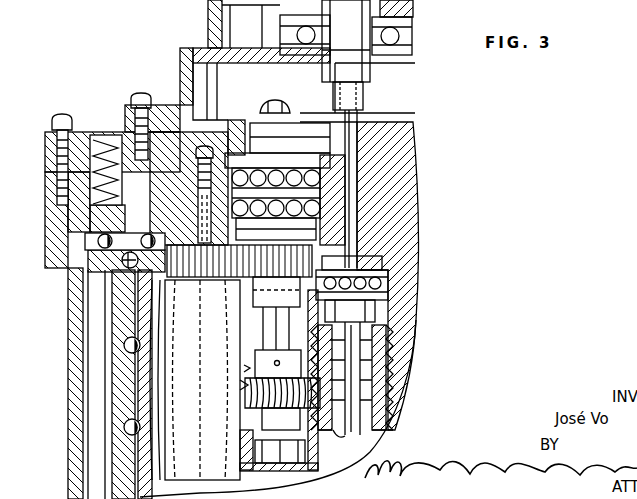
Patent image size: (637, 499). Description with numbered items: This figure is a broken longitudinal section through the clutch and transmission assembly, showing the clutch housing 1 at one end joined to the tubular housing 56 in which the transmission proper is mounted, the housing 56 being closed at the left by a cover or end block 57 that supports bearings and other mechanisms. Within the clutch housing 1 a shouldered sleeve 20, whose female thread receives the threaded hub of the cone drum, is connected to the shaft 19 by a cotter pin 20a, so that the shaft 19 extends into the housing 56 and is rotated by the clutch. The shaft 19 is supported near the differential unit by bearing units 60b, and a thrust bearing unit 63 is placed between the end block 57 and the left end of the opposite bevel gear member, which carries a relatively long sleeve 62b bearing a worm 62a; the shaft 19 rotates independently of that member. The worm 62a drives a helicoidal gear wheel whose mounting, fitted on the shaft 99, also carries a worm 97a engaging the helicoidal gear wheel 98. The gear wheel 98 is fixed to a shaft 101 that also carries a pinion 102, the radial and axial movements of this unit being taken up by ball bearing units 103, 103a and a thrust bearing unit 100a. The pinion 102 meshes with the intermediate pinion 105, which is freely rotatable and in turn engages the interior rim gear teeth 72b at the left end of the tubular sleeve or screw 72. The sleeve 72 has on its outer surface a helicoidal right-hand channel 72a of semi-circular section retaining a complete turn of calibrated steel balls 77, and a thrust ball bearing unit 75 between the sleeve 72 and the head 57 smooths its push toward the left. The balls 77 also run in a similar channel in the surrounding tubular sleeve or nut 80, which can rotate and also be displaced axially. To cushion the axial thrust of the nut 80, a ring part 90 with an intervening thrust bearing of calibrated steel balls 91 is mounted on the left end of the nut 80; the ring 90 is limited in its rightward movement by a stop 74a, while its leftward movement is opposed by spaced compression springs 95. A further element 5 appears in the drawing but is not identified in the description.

The housing 1 is at (190, 48).
The upper bearing 5 is at (386, 22).
The shaft 19 is at (395, 163).
The shouldered sleeve 20 is at (366, 66).
The cotter pin 20a is at (346, 95).
The tubular housing 56 is at (78, 421).
The cover or end block 57 is at (410, 188).
The bearing units 60b is at (376, 313).
The worm 62a is at (386, 370).
The sleeve 62b is at (380, 422).
The thrust bearing unit 63 is at (390, 278).
The tubular sleeve member or screw 72 is at (150, 484).
The helicoidal channel or thread 72a is at (125, 267).
The rim of interior gear teeth 72b is at (147, 238).
The stop 74a is at (67, 203).
The thrust ball bearing unit 75 is at (127, 237).
The calibrated steel balls 77 is at (124, 346).
The second tubular sleeve or nut 80 is at (115, 368).
The ring part 90 is at (83, 237).
The calibrated steel balls 91 is at (98, 243).
The compression springs 95 is at (77, 164).
The worm 97a is at (250, 366).
The helicoidal gear wheel 98 is at (262, 392).
The shaft 99 is at (390, 402).
The thrust bearing unit 100a is at (335, 198).
The shaft 101 is at (270, 314).
The pinion 102 is at (270, 268).
The ball bearing unit 103 is at (278, 455).
The ball bearing unit 103a is at (250, 125).
The intermediate pinion 105 is at (152, 287).